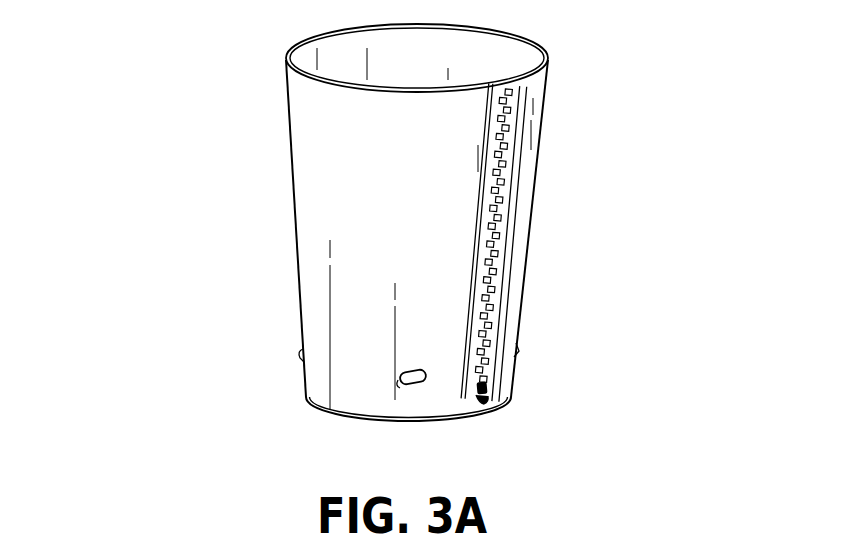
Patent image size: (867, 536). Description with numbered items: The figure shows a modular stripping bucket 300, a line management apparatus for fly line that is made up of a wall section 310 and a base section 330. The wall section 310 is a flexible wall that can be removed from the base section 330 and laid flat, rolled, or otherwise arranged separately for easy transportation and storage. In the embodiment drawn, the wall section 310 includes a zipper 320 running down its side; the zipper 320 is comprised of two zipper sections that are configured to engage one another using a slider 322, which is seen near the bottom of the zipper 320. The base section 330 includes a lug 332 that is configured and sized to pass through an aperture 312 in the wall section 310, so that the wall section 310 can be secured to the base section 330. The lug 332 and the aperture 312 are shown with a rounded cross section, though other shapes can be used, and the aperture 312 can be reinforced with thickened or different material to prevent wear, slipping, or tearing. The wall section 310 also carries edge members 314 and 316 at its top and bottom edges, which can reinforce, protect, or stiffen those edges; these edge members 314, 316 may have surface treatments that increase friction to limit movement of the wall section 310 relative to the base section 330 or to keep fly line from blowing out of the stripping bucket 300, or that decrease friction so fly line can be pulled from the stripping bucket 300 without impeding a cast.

The modular stripping bucket 300 is at (186, 99).
The wall section 310 is at (402, 182).
The aperture 312 is at (395, 383).
The edge member 314 is at (290, 52).
The edge member 316 is at (487, 386).
The zipper 320 is at (496, 207).
The slider 322 is at (500, 388).
The base section 330 is at (324, 426).
The lug 332 is at (404, 384).